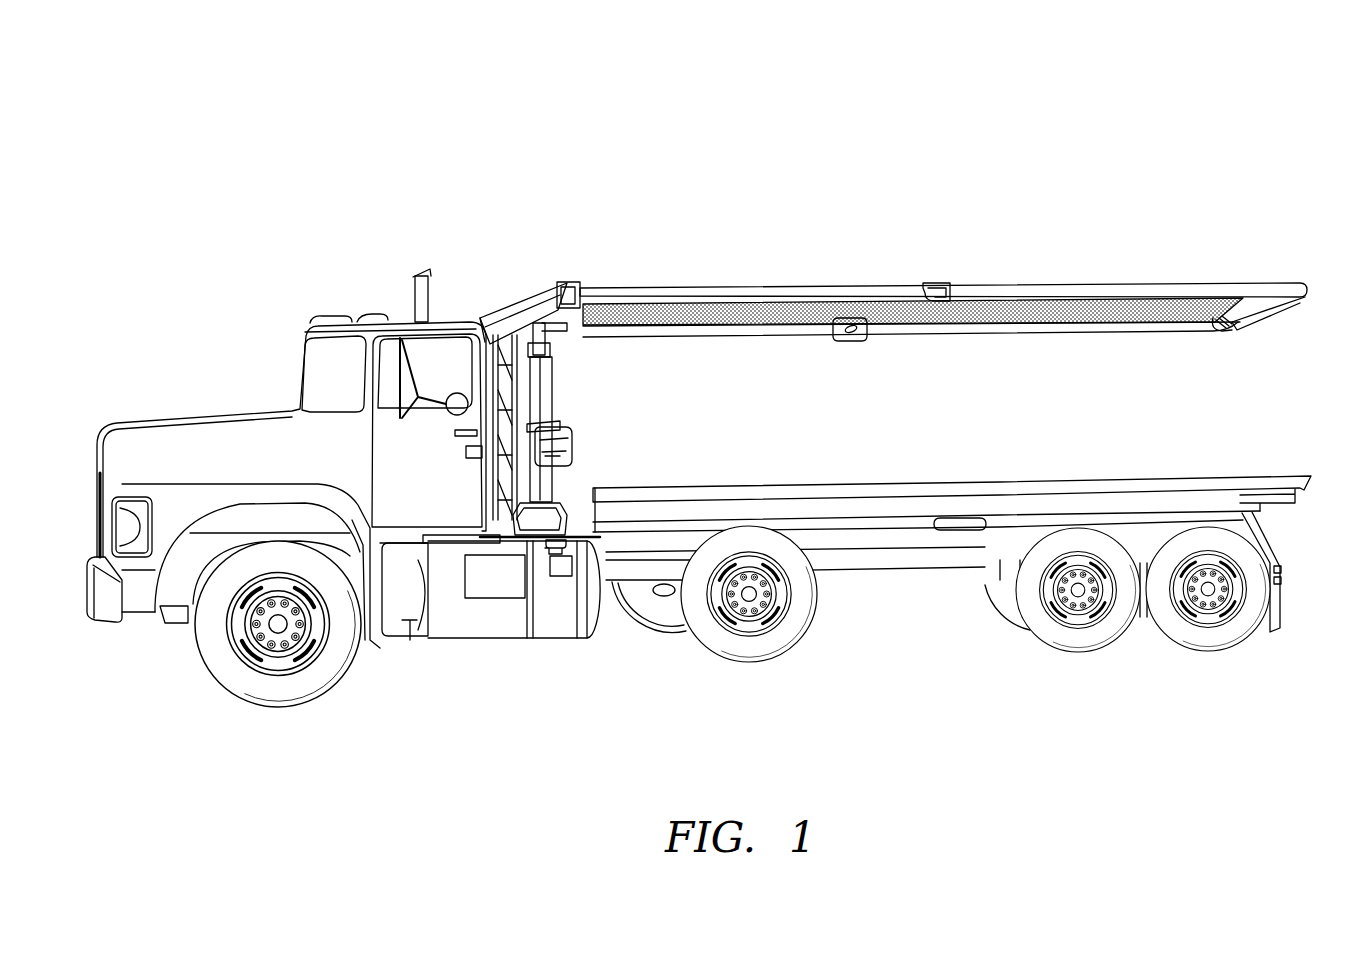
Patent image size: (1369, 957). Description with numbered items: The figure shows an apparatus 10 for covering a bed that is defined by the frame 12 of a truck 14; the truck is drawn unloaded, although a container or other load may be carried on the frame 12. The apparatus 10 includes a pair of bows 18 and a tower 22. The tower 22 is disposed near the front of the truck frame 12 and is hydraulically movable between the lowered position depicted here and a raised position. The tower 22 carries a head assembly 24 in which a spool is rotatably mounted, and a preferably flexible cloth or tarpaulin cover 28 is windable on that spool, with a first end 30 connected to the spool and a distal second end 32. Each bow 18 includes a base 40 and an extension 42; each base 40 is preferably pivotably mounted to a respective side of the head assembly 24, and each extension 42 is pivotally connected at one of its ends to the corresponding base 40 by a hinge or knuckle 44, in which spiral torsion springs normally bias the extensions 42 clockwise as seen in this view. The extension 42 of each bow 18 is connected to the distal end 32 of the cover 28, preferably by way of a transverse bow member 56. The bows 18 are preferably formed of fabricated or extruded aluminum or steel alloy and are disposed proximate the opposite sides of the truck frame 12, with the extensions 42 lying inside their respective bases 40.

The apparatus 10 is at (712, 168).
The frame 12 is at (1262, 478).
The truck 14 is at (197, 408).
The bows 18 is at (1100, 282).
The tower 22 is at (557, 393).
The head assembly 24 is at (522, 290).
The cover 28 is at (688, 311).
The first end 30 is at (590, 305).
The second end 32 is at (1243, 298).
The base 40 is at (812, 290).
The extension 42 is at (1015, 293).
The knuckle 44 is at (938, 282).
The transverse bow member 56 is at (1268, 307).